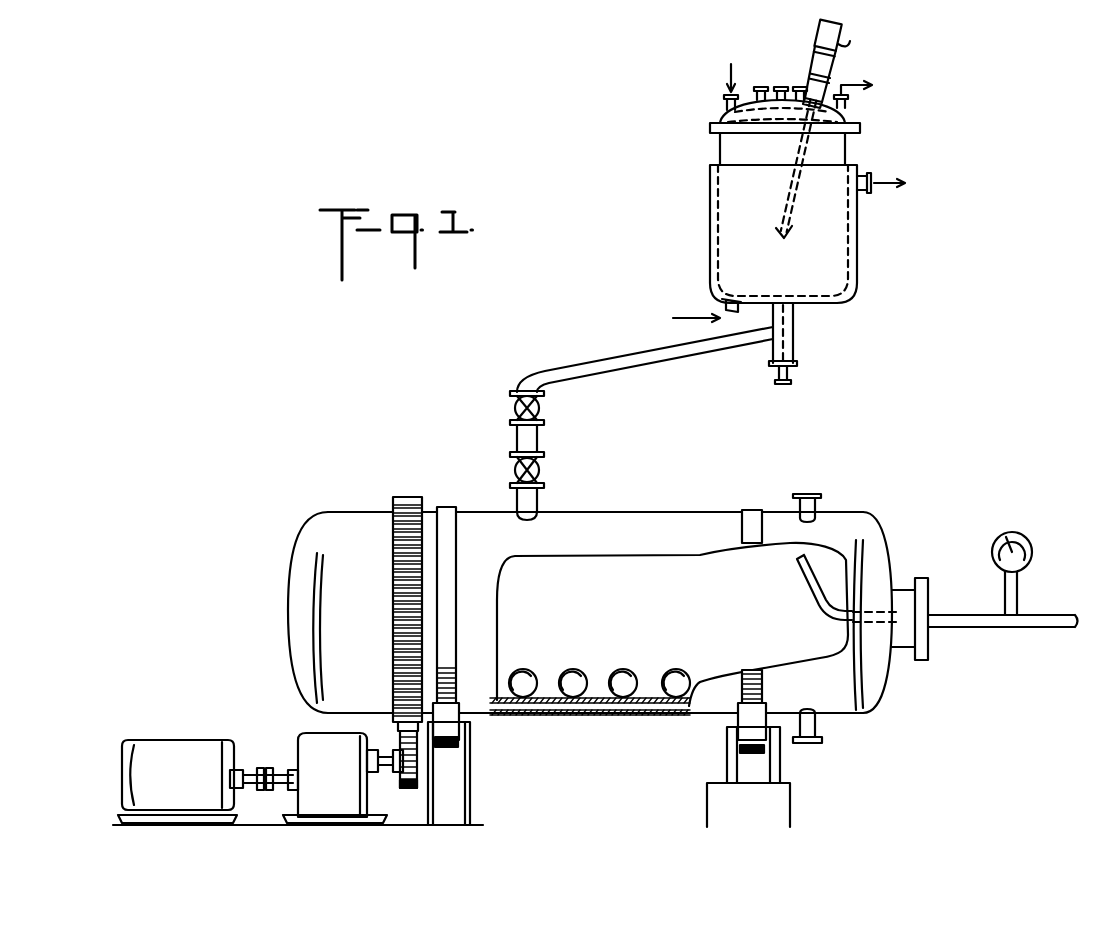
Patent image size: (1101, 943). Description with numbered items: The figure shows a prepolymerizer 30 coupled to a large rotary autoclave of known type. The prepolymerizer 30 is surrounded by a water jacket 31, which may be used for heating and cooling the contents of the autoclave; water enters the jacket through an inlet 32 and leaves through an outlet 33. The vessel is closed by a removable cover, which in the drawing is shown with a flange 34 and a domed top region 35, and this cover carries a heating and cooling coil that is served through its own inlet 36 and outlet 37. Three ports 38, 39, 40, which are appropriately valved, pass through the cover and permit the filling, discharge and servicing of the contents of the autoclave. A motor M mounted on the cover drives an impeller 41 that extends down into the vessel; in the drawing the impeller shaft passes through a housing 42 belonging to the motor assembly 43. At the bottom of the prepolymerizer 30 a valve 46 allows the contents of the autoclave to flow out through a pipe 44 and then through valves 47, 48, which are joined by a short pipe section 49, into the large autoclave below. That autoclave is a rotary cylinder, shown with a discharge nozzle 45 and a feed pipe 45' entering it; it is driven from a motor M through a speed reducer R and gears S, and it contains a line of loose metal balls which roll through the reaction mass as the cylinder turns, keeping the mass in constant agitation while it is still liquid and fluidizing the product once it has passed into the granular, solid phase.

The prepolymerizer 30 is at (858, 238).
The water jacket 31 is at (714, 218).
The inlet 32 is at (722, 303).
The outlet 33 is at (869, 178).
The vessel cover flange 34 is at (720, 112).
The dome cover interior 35 is at (791, 133).
The inlet 36 is at (724, 98).
The outlet 37 is at (846, 102).
The port 38 is at (757, 88).
The port 39 is at (773, 88).
The port 40 is at (800, 88).
The impeller 41 is at (784, 255).
The shaft seal housing 42 is at (840, 76).
The agitator motor 43 is at (837, 64).
The pipe 44 is at (655, 362).
The drain nozzle 45 is at (830, 735).
The inlet pipe into drum 45' is at (832, 590).
The valve 46 is at (793, 374).
The valve 47 is at (511, 402).
The valve 48 is at (511, 472).
The pipe section between valves 49 is at (515, 438).
The motor M is at (168, 755).
The speed reducer R is at (314, 752).
The gears S is at (406, 765).